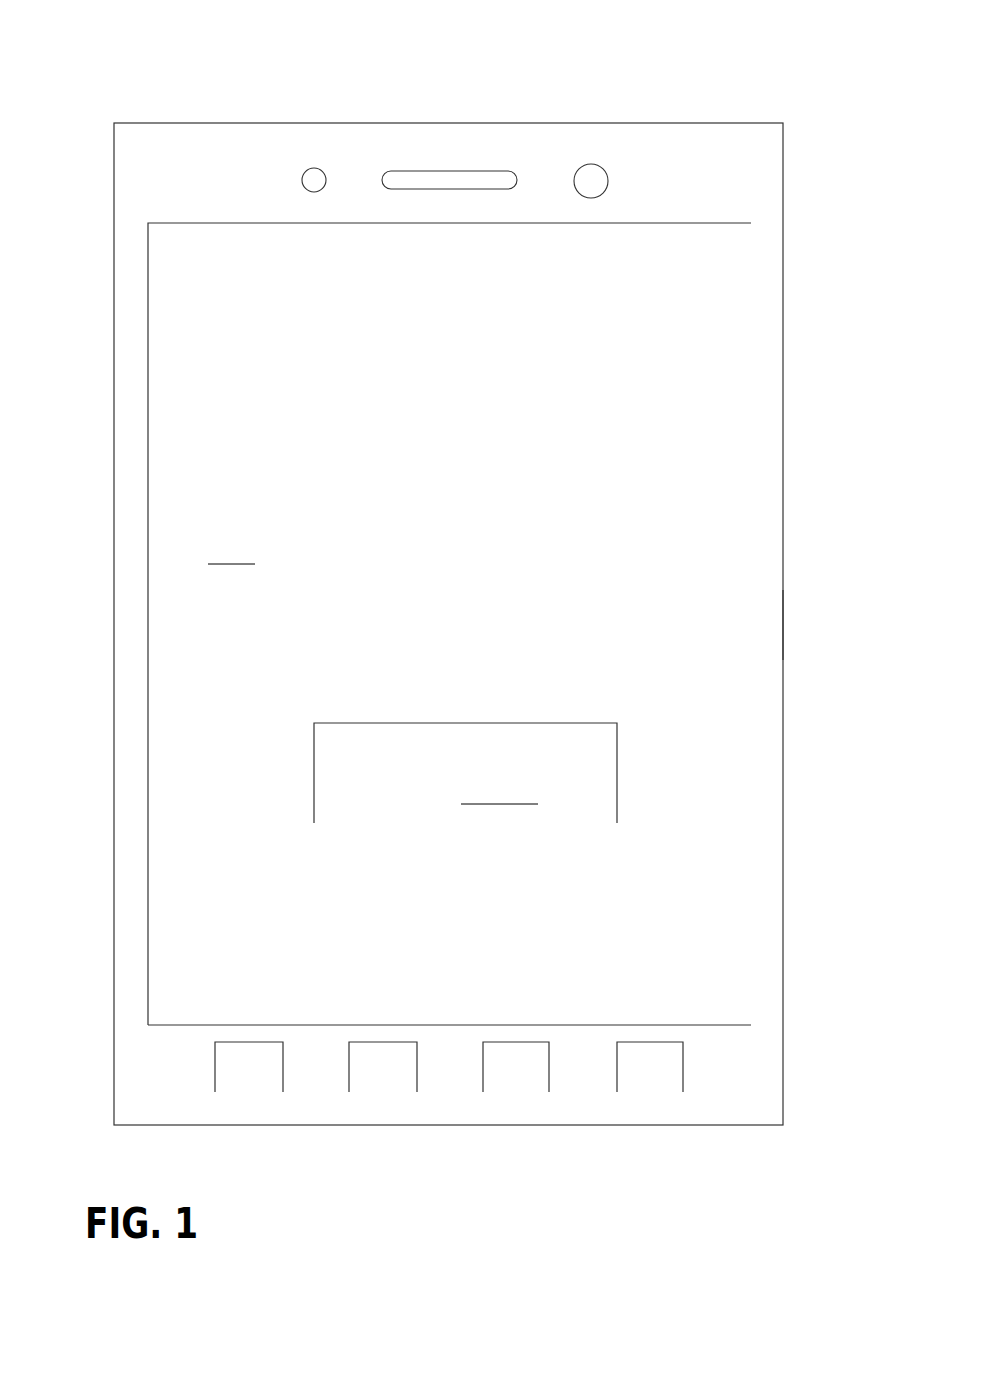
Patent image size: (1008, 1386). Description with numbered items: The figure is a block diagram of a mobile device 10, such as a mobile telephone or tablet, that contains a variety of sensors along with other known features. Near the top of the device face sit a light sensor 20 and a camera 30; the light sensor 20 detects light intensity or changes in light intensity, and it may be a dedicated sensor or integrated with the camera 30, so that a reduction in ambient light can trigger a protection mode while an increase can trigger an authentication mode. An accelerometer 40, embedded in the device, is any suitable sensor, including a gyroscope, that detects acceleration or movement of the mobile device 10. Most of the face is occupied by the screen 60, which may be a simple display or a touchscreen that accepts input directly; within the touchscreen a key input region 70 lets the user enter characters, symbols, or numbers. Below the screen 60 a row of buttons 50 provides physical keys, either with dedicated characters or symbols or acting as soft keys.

The mobile device 10 is at (448, 562).
The light sensor 20 is at (269, 119).
The camera 30 is at (648, 130).
The accelerometer 40 is at (826, 655).
The buttons 50 is at (449, 1150).
The screen 60 is at (403, 624).
The key input region 70 is at (465, 773).